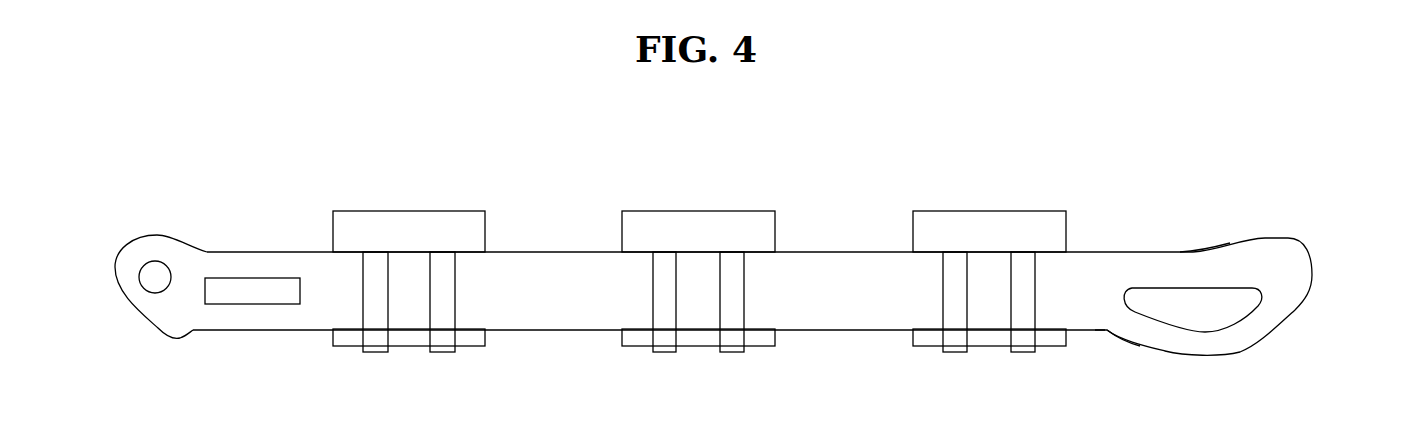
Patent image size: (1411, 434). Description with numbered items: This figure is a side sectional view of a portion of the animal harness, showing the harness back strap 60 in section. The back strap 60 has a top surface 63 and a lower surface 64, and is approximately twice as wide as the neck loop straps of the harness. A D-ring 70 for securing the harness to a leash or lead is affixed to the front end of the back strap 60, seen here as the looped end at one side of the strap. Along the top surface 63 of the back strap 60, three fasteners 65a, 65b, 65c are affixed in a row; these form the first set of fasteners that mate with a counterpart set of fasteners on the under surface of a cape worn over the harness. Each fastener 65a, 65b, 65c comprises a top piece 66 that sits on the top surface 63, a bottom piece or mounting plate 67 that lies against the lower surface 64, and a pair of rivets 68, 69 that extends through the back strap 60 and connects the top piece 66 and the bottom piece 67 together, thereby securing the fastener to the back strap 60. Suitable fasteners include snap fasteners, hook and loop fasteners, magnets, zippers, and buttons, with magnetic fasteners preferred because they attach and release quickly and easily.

The harness back strap 60 is at (1303, 258).
The top surface 63 is at (1173, 252).
The lower surface 64 is at (1104, 330).
The fastener 65a is at (411, 265).
The fastener 65b is at (640, 172).
The fastener 65c is at (932, 173).
The top piece 66 is at (408, 211).
The bottom piece or mounting plate 67 is at (485, 346).
The rivet 68 is at (373, 353).
The rivet 69 is at (445, 353).
The D-ring 70 is at (152, 293).